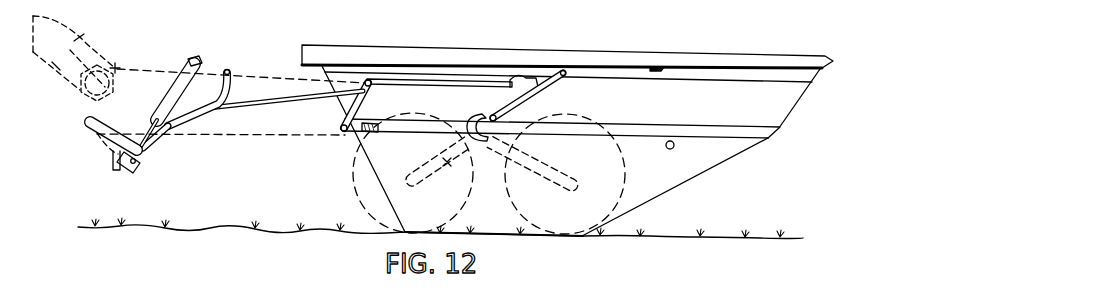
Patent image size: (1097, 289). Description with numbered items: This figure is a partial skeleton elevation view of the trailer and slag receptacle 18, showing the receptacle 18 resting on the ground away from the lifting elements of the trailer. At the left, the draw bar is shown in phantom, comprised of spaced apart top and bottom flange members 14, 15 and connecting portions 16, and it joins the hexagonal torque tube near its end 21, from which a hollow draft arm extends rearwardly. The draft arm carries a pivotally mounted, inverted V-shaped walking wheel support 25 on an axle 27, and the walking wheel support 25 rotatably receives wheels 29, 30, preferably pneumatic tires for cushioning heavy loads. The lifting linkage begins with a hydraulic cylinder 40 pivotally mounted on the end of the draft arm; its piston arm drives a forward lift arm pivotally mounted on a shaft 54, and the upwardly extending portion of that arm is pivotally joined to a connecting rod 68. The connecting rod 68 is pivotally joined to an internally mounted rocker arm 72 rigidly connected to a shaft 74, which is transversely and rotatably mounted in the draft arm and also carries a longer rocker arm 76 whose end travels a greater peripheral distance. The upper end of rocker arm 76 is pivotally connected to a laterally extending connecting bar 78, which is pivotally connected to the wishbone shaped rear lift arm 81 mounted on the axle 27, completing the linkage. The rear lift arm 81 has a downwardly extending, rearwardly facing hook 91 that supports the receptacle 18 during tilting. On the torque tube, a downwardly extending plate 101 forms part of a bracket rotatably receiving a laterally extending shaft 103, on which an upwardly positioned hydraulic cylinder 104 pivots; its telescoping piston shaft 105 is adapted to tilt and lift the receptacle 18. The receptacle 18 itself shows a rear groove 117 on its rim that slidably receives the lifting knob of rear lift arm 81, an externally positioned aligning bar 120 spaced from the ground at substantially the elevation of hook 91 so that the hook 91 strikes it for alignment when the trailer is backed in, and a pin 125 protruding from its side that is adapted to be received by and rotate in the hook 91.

The top flange member 14 is at (54, 21).
The bottom flange member 15 is at (57, 66).
The connecting portions 16 is at (77, 38).
The slag receptacle 18 is at (769, 134).
The end of torque tube 21 is at (116, 68).
The walking wheel support 25 is at (427, 179).
The axle 27 is at (511, 82).
The wheel 29 is at (349, 188).
The wheel 30 is at (620, 198).
The hydraulic cylinder 40 is at (100, 118).
The shaft 54 is at (173, 133).
The connecting rod 68 is at (262, 101).
The rocker arm 72 is at (348, 103).
The shaft 74 is at (346, 133).
The rocker arm 76 is at (370, 85).
The connecting bar 78 is at (438, 80).
The rear lift arm 81 is at (546, 95).
The hook 91 is at (472, 137).
The plate 101 is at (100, 143).
The shaft 103 is at (136, 165).
The hydraulic cylinder 104 is at (167, 100).
The telescoping piston shaft 105 is at (190, 60).
The rear groove 117 is at (662, 71).
The aligning bar 120 is at (665, 128).
The pin 125 is at (666, 146).